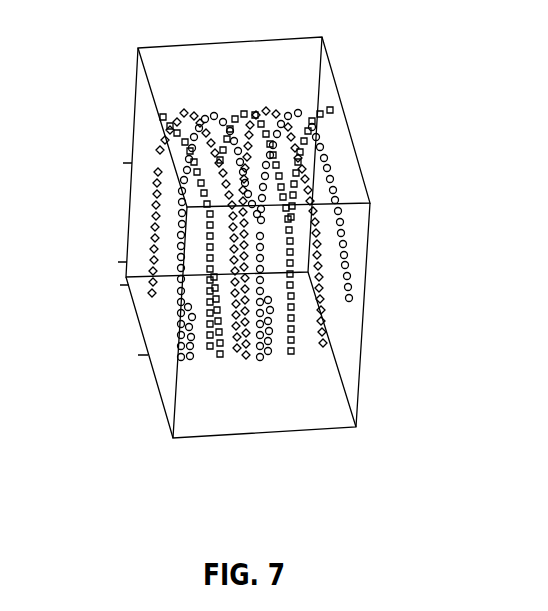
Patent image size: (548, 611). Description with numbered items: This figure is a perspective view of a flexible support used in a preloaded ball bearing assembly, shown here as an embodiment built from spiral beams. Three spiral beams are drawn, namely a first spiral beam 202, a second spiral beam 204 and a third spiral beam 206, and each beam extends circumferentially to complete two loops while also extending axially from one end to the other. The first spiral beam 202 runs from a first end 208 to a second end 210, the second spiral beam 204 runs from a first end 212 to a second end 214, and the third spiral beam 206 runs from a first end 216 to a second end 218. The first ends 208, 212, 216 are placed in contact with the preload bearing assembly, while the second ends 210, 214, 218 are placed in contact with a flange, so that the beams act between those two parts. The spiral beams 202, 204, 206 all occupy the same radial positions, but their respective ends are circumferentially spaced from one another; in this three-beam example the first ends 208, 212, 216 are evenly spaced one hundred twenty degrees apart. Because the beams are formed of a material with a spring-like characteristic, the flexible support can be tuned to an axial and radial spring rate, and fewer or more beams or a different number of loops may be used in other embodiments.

The first spiral beam 202 is at (220, 363).
The second spiral beam 204 is at (190, 110).
The third spiral beam 206 is at (264, 360).
The first end 208 is at (163, 118).
The second end 210 is at (330, 111).
The first end 212 is at (148, 292).
The second end 214 is at (327, 278).
The first end 216 is at (173, 312).
The second end 218 is at (352, 303).